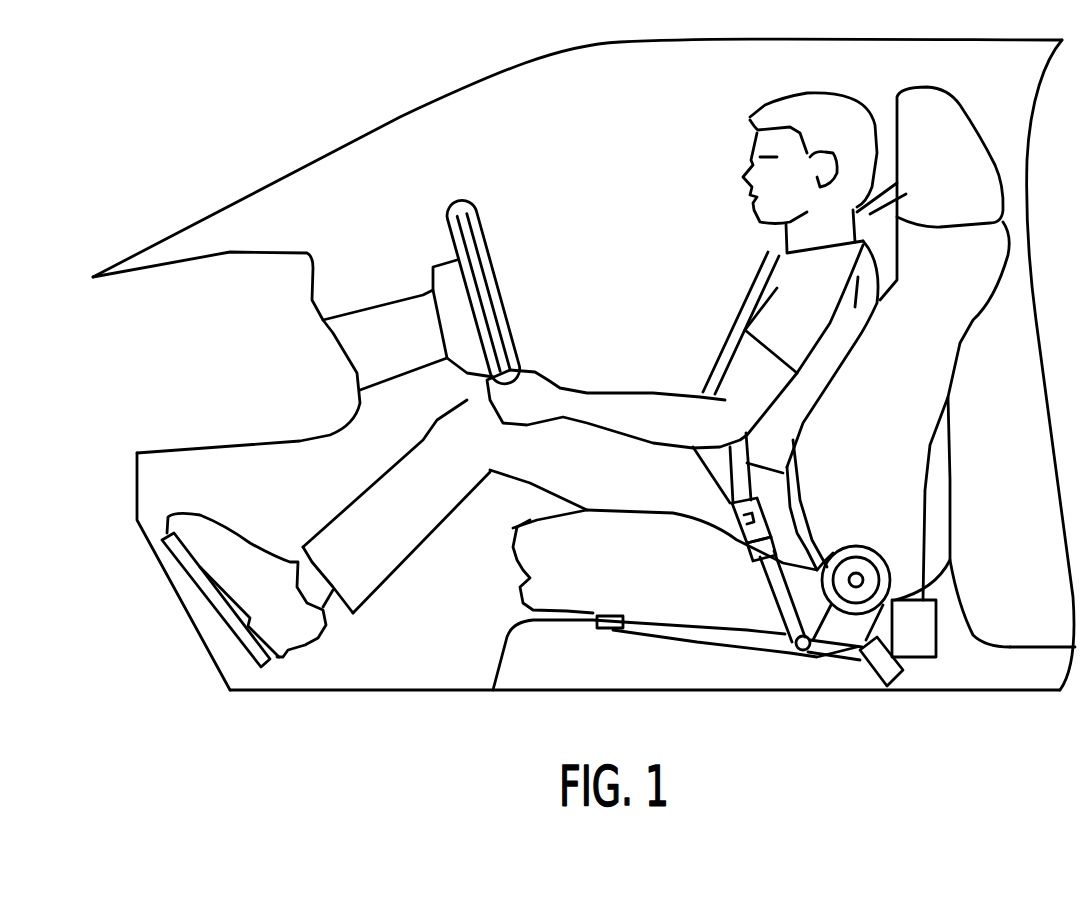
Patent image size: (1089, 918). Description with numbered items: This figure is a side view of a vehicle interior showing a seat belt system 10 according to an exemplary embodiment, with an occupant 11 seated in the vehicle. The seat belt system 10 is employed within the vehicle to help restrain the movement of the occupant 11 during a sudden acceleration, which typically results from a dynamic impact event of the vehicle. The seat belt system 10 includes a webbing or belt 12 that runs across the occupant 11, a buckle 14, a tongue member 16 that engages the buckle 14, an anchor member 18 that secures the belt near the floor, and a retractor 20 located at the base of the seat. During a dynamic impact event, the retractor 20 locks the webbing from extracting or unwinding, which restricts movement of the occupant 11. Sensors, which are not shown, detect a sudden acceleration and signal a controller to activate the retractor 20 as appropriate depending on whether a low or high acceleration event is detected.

The seat belt system 10 is at (201, 124).
The occupant 11 is at (662, 410).
The belt 12 is at (953, 560).
The buckle 14 is at (737, 565).
The tongue member 16 is at (723, 497).
The anchor member 18 is at (885, 676).
The retractor 20 is at (922, 640).